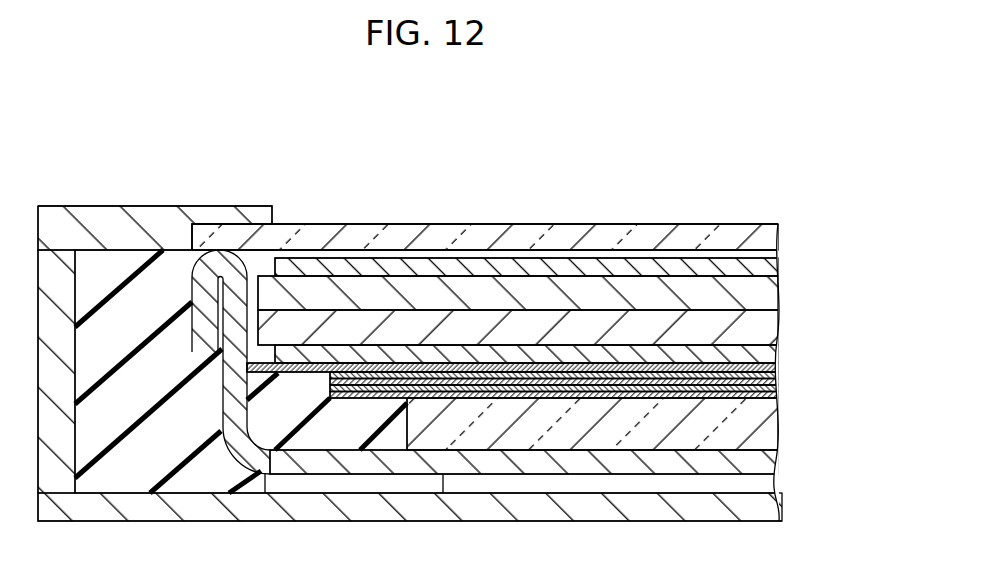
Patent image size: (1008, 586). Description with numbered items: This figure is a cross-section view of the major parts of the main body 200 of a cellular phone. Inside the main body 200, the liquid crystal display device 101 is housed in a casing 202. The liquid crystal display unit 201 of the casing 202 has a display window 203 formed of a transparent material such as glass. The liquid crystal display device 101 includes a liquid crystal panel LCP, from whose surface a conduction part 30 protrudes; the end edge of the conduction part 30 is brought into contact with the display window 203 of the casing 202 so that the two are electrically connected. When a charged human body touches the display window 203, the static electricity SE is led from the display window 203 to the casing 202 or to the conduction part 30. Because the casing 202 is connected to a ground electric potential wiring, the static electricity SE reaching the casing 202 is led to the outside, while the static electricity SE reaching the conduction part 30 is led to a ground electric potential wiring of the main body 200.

The main body 200 is at (343, 125).
The casing 202 is at (102, 207).
The conduction part 30 is at (238, 250).
The liquid crystal display unit 201 is at (696, 185).
The display window 203 is at (568, 230).
The liquid crystal display device 101 is at (845, 252).
The static electricity SE is at (473, 103).
The liquid crystal panel LCP is at (792, 248).